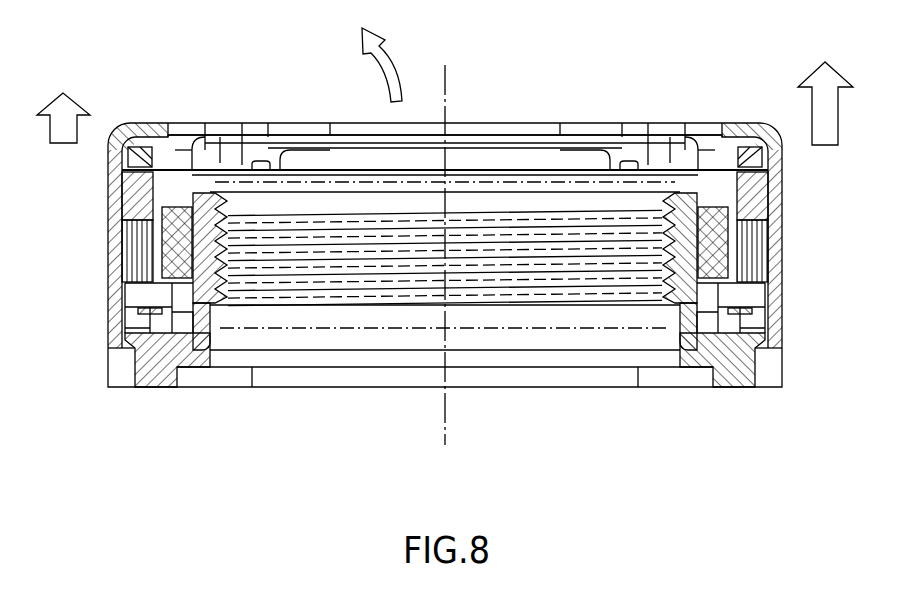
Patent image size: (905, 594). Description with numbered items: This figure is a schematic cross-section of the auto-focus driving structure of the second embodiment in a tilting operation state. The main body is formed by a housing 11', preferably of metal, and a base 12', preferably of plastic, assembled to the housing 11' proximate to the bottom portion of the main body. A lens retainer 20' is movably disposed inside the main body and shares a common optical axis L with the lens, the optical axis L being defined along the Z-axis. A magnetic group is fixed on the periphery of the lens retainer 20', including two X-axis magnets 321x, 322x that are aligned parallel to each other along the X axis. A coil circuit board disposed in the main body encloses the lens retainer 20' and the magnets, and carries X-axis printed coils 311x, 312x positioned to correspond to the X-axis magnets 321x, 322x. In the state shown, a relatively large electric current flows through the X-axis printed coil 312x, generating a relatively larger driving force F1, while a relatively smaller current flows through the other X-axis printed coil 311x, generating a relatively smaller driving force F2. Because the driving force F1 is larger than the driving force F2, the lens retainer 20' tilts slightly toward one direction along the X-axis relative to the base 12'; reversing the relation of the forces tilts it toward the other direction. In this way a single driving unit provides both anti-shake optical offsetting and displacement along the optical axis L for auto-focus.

The housing 11' is at (445, 196).
The base 12' is at (445, 369).
The lens retainer 20' is at (445, 207).
The X-axis printed coil 311x is at (146, 245).
The X-axis printed coil 312x is at (742, 247).
The X-axis magnet 321x is at (170, 270).
The X-axis magnet 322x is at (722, 267).
The optical axis L is at (447, 85).
The driving force F1 is at (825, 123).
The driving force F2 is at (63, 140).